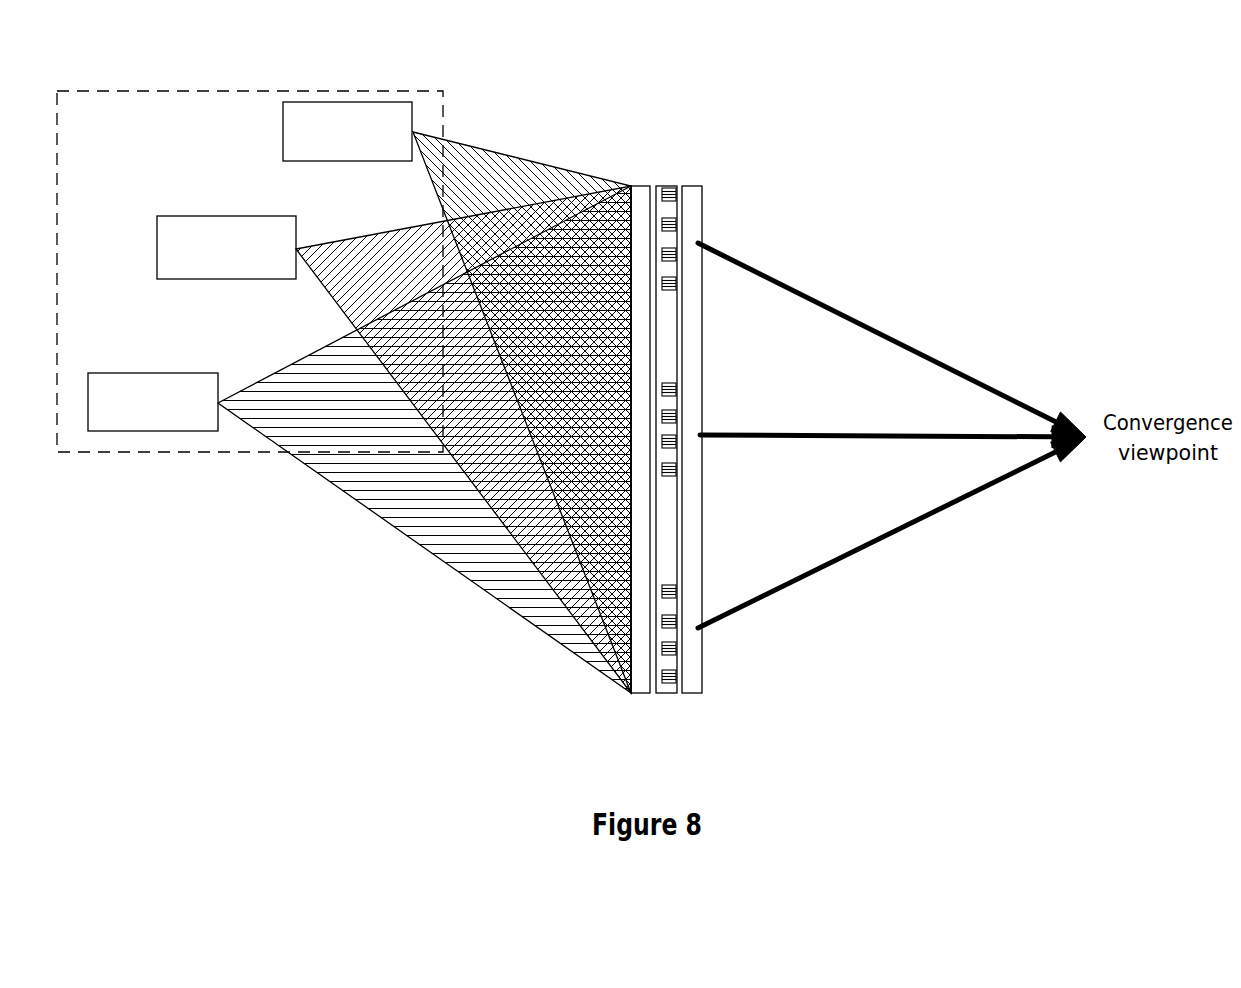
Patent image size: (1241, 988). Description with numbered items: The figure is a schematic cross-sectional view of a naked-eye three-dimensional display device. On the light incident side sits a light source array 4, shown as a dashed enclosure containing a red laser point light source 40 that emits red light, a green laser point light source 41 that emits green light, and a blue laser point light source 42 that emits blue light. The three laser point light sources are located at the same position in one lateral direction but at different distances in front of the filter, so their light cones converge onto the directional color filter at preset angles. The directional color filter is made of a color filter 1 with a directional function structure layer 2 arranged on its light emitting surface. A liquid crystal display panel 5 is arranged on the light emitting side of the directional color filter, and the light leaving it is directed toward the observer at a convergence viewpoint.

The light source array 4 is at (186, 91).
The red laser point light source 40 is at (283, 141).
The green laser point light source 41 is at (183, 216).
The blue laser point light source 42 is at (143, 373).
The color filter 1 is at (641, 190).
The directional function structure layer 2 is at (666, 190).
The liquid crystal display panel 5 is at (692, 190).